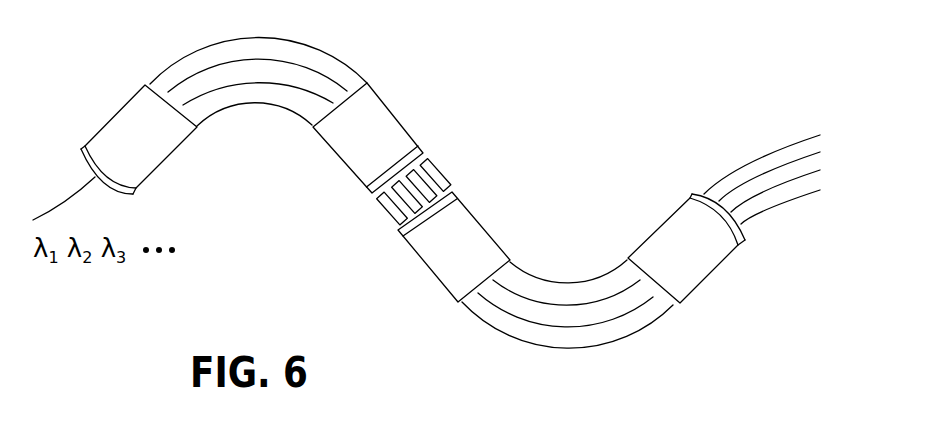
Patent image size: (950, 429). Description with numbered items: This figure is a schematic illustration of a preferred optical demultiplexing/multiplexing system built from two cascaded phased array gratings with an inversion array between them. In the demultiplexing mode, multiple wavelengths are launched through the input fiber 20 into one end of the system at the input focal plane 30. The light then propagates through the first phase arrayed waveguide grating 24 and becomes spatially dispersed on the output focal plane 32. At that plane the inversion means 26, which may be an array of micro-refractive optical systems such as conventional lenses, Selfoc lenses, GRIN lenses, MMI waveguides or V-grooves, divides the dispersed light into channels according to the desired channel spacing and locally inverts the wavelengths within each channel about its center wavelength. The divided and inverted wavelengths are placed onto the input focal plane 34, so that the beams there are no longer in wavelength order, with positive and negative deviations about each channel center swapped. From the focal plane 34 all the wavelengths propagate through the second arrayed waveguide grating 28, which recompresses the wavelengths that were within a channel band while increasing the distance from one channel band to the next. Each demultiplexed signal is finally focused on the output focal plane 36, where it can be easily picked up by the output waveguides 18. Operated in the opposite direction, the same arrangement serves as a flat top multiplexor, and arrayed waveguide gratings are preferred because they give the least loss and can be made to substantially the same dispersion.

The output waveguides 18 is at (775, 148).
The input fiber 20 is at (62, 205).
The first phase arrayed waveguide grating 24 is at (255, 105).
The inversion means 26 is at (390, 217).
The second arrayed waveguide grating 28 is at (531, 345).
The input focal plane 30 is at (117, 194).
The output focal plane 32 is at (421, 147).
The input focal plane 34 is at (454, 192).
The output focal plane 36 is at (698, 195).